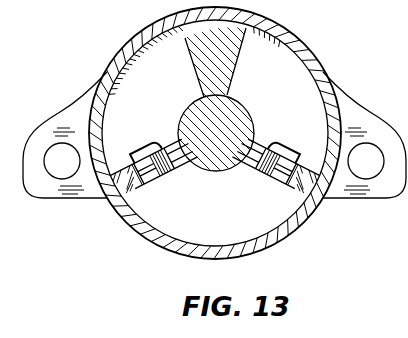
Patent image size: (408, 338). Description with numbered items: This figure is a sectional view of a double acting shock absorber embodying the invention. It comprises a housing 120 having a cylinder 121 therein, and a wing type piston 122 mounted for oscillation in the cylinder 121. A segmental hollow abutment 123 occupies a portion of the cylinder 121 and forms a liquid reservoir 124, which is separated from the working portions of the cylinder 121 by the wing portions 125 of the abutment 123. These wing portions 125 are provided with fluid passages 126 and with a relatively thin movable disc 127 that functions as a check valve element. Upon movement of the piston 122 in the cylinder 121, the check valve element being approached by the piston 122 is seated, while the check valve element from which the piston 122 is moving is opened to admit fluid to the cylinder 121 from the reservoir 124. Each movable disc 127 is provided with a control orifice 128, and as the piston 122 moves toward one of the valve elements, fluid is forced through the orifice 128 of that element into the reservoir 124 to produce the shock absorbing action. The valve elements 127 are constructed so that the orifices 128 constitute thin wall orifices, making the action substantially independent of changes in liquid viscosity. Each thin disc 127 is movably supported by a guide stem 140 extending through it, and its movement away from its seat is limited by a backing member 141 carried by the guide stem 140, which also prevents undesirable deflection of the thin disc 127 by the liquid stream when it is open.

The housing 120 is at (300, 55).
The cylinder 121 is at (297, 82).
The wing type piston 122 is at (194, 60).
The segmental hollow abutment 123 is at (210, 176).
The liquid reservoir 124 is at (287, 229).
The wing portions 125 is at (300, 190).
The fluid passages 126 is at (257, 180).
The movable disc 127 is at (120, 170).
The control orifice 128 is at (162, 143).
The guide stem 140 is at (266, 183).
The backing member 141 is at (277, 143).